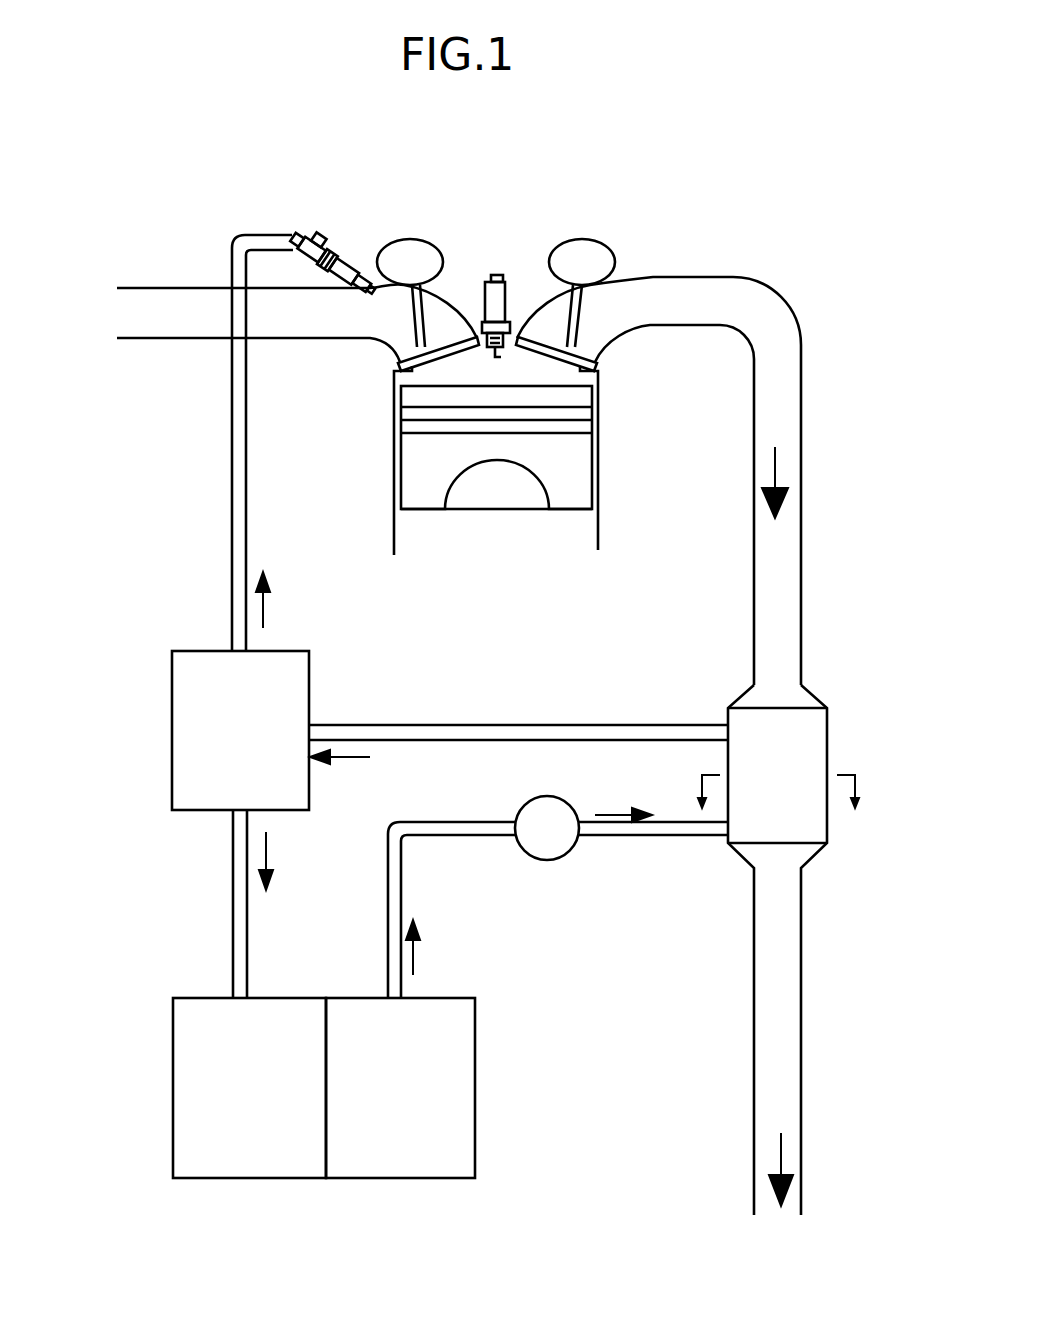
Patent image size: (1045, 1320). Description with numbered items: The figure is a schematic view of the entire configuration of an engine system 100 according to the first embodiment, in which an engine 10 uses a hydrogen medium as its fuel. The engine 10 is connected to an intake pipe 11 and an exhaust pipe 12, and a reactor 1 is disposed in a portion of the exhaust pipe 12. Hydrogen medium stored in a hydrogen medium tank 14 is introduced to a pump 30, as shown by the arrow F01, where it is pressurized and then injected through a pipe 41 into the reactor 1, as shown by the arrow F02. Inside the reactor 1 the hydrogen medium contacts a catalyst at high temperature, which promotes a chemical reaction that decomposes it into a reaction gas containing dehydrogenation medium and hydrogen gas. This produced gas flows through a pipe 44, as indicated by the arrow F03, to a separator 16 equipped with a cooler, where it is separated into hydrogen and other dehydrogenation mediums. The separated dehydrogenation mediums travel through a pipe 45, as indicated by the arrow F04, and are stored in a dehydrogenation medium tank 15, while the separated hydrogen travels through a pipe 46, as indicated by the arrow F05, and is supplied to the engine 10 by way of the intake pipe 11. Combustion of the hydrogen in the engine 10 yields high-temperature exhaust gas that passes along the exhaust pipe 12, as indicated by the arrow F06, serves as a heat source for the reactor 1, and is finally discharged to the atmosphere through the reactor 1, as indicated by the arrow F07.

The engine system 100 is at (758, 217).
The intake pipe 11 is at (143, 288).
The exhaust pipe 12 is at (762, 292).
The engine 10 is at (394, 470).
The reactor 1 is at (828, 745).
The pipe 46 is at (232, 522).
The separator 16 is at (172, 698).
The pipe 44 is at (578, 724).
The pipe 45 is at (232, 947).
The pipe 41 is at (617, 837).
The pump 30 is at (540, 858).
The hydrogen medium tank 14 is at (363, 1180).
The dehydrogenation medium tank 15 is at (209, 1180).
The arrow F01 is at (418, 963).
The arrow F02 is at (620, 812).
The arrow F03 is at (347, 757).
The arrow F04 is at (272, 853).
The arrow F05 is at (265, 607).
The arrow F06 is at (780, 475).
The arrow F07 is at (783, 1162).